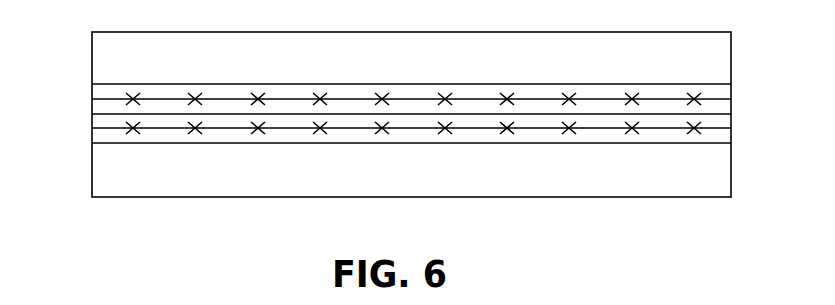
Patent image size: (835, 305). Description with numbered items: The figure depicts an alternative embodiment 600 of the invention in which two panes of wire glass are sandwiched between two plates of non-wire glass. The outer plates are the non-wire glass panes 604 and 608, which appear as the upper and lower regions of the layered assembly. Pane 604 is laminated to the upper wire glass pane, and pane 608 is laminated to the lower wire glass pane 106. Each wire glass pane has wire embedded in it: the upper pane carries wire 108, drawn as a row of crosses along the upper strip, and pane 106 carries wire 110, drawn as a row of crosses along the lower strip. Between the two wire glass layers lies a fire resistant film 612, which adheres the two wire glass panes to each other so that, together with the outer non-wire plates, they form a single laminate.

The alternative embodiment 600 is at (784, 100).
The pane 604 is at (688, 62).
The pane 608 is at (684, 180).
The wire 108 is at (128, 98).
The fire resistant film 612 is at (89, 113).
The wire 110 is at (89, 128).
The pane 106 is at (170, 138).